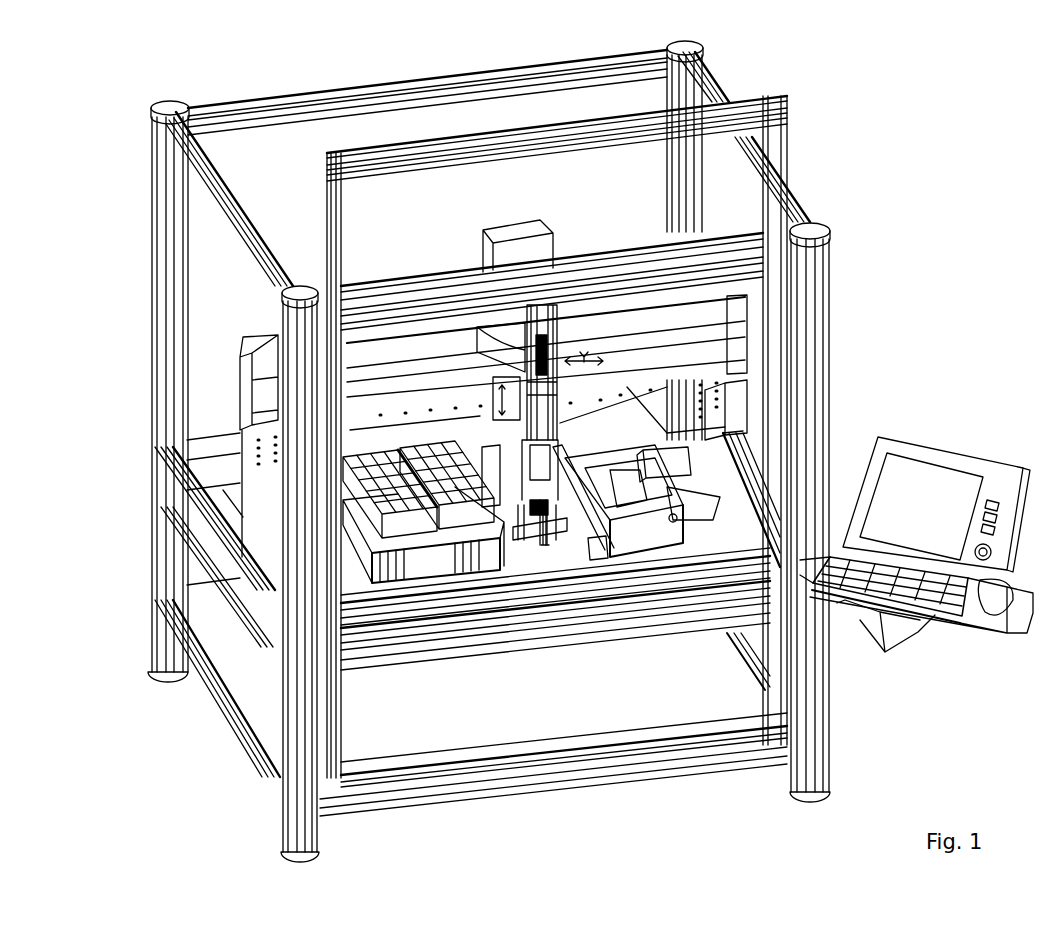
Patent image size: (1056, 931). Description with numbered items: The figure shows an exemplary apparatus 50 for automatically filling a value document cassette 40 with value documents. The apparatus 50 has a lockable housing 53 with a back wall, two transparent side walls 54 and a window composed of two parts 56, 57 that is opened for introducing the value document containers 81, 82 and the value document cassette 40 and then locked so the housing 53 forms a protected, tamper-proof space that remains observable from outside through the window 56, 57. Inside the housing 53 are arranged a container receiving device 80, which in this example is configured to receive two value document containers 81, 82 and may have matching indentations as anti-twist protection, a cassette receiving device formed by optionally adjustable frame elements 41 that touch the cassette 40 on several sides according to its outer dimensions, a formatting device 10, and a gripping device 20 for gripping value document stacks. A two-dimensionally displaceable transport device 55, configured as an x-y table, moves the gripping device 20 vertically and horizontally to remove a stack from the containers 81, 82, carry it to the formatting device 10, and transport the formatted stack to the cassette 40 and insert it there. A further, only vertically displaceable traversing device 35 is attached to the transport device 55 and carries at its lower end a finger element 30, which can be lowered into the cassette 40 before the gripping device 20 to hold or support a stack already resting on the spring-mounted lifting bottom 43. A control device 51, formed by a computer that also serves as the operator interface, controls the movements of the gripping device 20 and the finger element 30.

The apparatus 50 is at (438, 44).
The control device 51 is at (1017, 533).
The lockable housing 53 is at (152, 400).
The transparent side walls 54 is at (200, 237).
The transport device 55 is at (487, 247).
The window part 56 is at (430, 788).
The window part 57 is at (355, 215).
The traversing device 35 is at (548, 350).
The gripping device 20 is at (520, 439).
The finger element 30 is at (518, 471).
The formatting device 10 is at (547, 534).
The value document cassette 40 is at (647, 549).
The frame elements 41 is at (595, 552).
The lifting bottom 43 is at (636, 451).
The container receiving device 80 is at (388, 580).
The value document container 81 is at (430, 449).
The value document container 82 is at (358, 453).